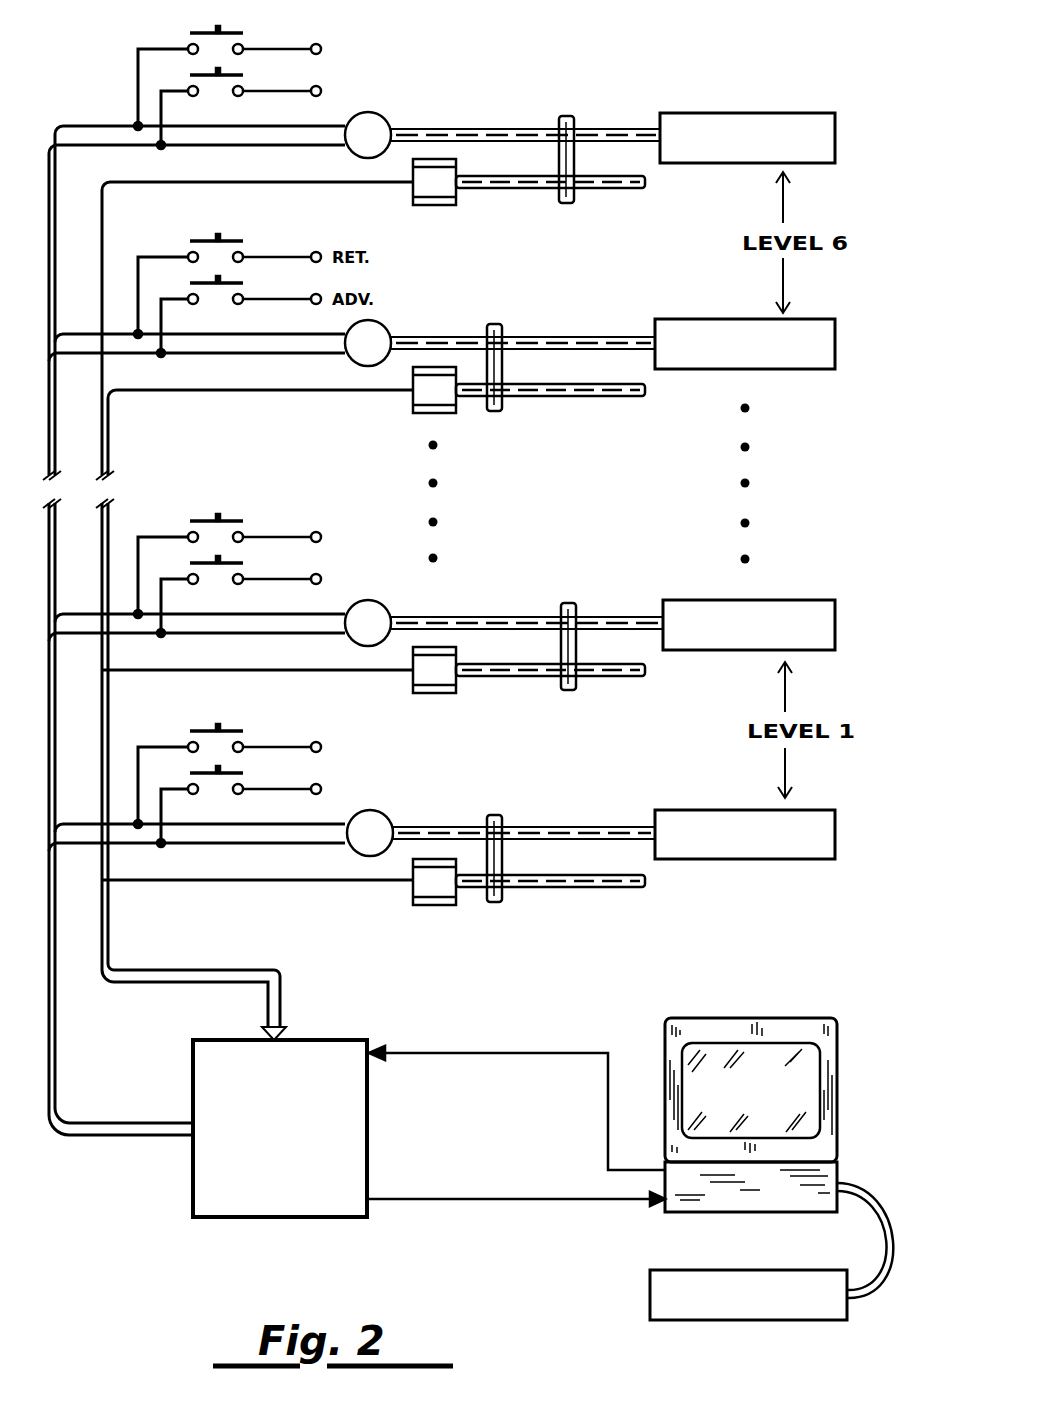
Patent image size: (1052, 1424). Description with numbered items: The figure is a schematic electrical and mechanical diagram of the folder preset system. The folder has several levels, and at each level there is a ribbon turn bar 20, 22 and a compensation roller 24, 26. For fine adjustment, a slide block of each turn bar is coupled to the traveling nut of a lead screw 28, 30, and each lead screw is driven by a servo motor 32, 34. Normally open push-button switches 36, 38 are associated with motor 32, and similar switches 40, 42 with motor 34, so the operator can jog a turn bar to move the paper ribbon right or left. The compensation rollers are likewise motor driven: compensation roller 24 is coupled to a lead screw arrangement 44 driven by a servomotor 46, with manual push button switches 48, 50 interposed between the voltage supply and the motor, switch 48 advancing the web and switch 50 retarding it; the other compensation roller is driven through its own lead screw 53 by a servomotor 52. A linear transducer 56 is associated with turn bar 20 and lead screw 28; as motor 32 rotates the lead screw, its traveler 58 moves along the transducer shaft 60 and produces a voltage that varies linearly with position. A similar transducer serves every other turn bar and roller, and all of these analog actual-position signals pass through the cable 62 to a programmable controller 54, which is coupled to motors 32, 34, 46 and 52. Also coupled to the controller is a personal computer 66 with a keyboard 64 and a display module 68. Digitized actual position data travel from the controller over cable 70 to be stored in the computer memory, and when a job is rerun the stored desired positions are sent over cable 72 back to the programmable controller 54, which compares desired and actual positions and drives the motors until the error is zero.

The ribbon turn bar 20 is at (836, 125).
The ribbon turn bar 22 is at (836, 613).
The compensation roller 24 is at (836, 822).
The compensation roller 26 is at (836, 333).
The lead screw 28 is at (625, 128).
The lead screw 30 is at (626, 616).
The servo motor 32 is at (384, 116).
The servo motor 34 is at (384, 604).
The push-button switch 36 is at (243, 76).
The push-button switch 38 is at (243, 34).
The push-button switch 40 is at (243, 564).
The push-button switch 42 is at (243, 522).
The lead screw arrangement 44 is at (613, 826).
The servomotor 46 is at (386, 814).
The push button switch 48 is at (243, 774).
The push button switch 50 is at (243, 732).
The servomotor 52 is at (384, 324).
The compensating roller 6 drive shaft 53 is at (614, 336).
The programmable controller module 54 is at (284, 1218).
The linear transducer 56 is at (542, 207).
The traveler 58 is at (566, 115).
The transducer shaft 60 is at (612, 188).
The cable 62 is at (108, 440).
The keyboard 64 is at (778, 1270).
The computer 66 is at (735, 1213).
The display module 68 is at (755, 1107).
The cable 70 is at (493, 1200).
The cable 72 is at (483, 1055).